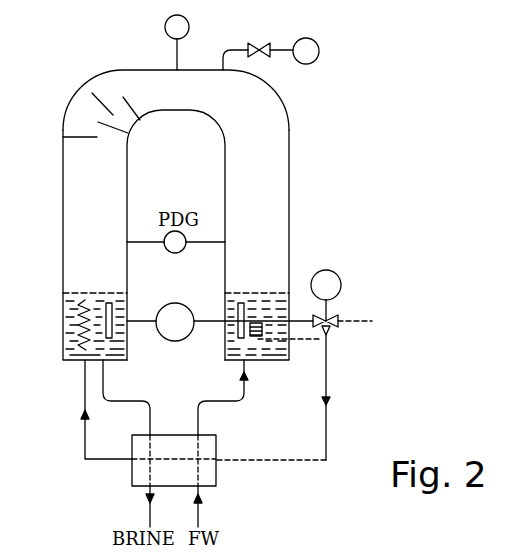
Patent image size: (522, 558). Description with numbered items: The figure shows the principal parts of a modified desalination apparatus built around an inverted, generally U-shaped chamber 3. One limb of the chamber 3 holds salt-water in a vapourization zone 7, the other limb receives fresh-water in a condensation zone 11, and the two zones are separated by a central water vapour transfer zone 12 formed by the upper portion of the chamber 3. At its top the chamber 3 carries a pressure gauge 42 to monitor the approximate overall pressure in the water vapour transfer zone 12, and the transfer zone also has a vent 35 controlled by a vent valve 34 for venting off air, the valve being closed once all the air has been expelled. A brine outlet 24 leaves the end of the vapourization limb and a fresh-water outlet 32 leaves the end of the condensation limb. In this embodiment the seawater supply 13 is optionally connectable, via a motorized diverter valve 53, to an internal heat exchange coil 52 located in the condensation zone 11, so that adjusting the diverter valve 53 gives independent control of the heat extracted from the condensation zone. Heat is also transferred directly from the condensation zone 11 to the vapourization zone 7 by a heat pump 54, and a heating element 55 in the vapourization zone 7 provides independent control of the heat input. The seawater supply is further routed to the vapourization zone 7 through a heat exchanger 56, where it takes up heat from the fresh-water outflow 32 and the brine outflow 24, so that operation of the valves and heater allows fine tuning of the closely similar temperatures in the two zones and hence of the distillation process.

The chamber 3 is at (289, 196).
The central water vapour transfer zone 12 is at (258, 103).
The pressure gauge 42 is at (190, 26).
The vent valve 34 is at (260, 45).
The vent 35 is at (305, 40).
The vapourization zone 7 is at (64, 296).
The heating element 55 is at (82, 322).
The condensation zone 11 is at (266, 293).
The internal heat exchange coil 52 is at (258, 337).
The heat pump 54 is at (177, 342).
The motorized diverter valve 53 is at (337, 315).
The seawater supply 13 is at (372, 320).
The brine outlet 24 is at (103, 374).
The fresh-water outlet 32 is at (247, 368).
The heat exchanger 56 is at (132, 468).